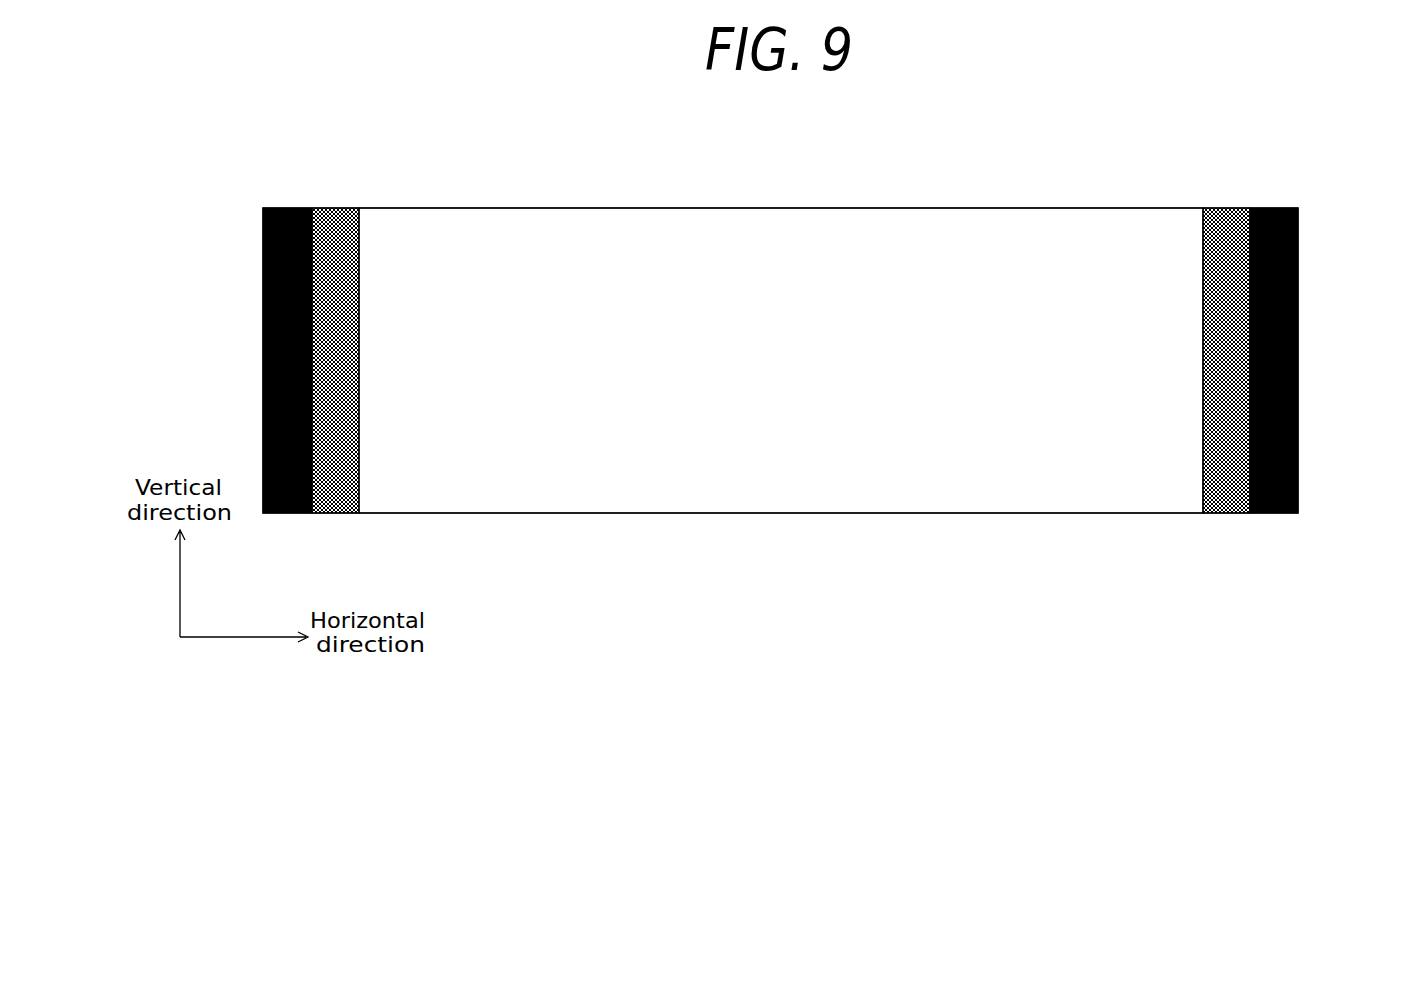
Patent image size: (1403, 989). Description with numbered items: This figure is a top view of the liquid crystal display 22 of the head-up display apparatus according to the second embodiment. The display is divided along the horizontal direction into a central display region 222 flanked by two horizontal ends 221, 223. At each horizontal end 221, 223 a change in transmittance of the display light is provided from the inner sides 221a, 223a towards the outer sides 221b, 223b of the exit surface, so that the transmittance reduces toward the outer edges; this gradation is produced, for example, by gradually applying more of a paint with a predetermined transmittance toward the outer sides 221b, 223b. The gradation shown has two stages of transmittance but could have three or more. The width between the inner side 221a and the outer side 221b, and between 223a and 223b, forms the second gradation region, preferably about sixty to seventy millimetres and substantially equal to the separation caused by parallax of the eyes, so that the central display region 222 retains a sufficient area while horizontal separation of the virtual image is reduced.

The liquid crystal display 22 is at (787, 448).
The horizontal end 221 is at (316, 318).
The inner side 221a is at (359, 354).
The outer side 221b is at (263, 357).
The central display region 222 is at (1200, 200).
The horizontal end 223 is at (1247, 318).
The inner side 223a is at (1203, 355).
The outer side 223b is at (1300, 357).